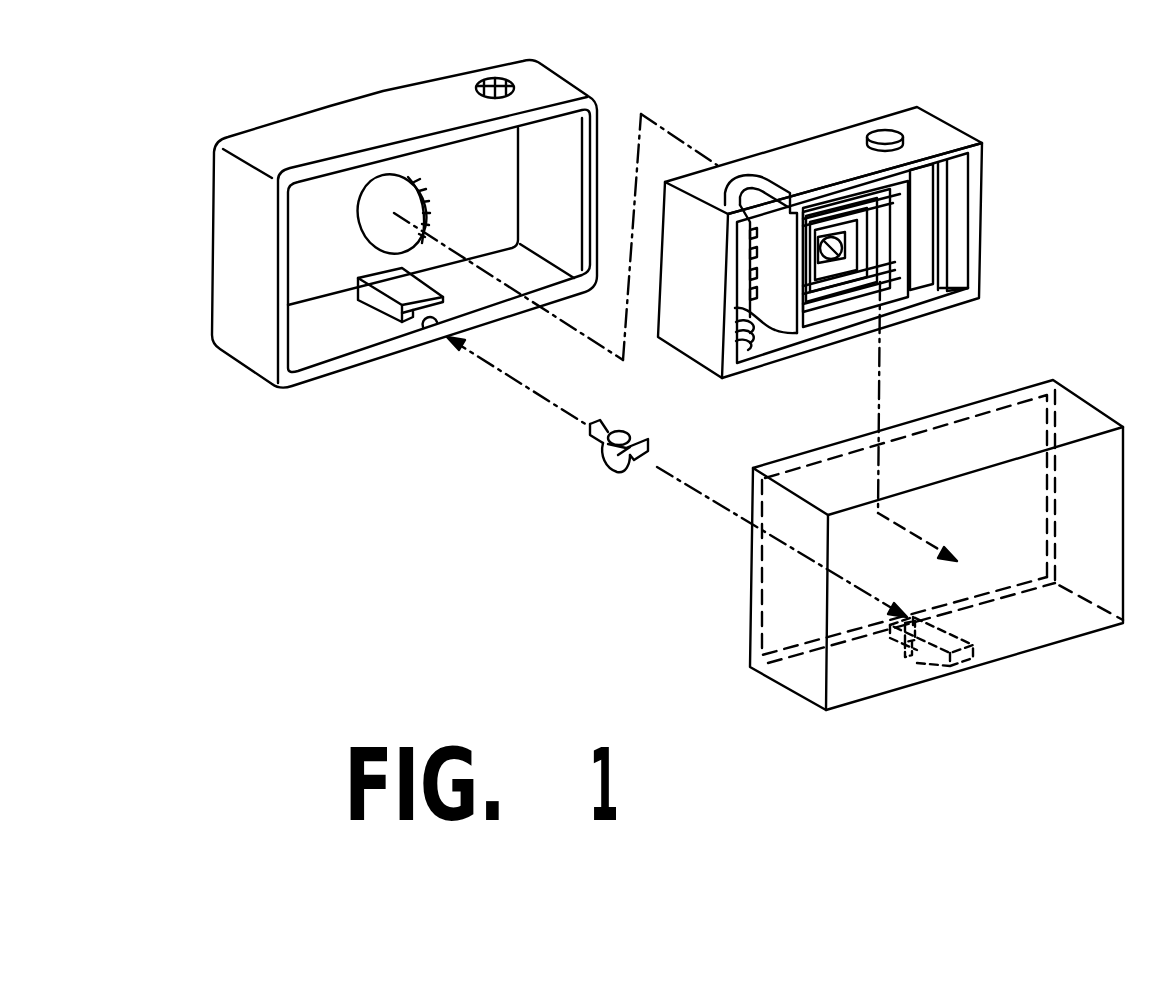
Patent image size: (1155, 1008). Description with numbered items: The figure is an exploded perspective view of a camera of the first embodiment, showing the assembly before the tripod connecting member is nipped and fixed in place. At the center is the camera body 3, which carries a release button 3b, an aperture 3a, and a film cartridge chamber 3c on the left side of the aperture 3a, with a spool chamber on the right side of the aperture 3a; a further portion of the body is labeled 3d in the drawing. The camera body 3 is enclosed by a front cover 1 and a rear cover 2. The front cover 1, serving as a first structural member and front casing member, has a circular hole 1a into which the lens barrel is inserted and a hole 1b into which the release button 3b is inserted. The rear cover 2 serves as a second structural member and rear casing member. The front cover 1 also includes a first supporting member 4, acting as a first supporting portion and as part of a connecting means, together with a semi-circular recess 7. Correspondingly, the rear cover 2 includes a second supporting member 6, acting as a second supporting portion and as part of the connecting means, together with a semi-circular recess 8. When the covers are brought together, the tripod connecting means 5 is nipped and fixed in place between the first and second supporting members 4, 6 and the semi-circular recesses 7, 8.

The front cover 1 is at (562, 88).
The circular hole 1a is at (380, 192).
The hole 1b is at (497, 78).
The rear cover 2 is at (1080, 407).
The camera body 3 is at (948, 140).
The aperture 3a is at (845, 257).
The release button 3b is at (886, 130).
The film cartridge chamber 3c is at (767, 338).
The recess 3d is at (940, 280).
The first supporting member 4 is at (392, 285).
The tripod connecting means 5 is at (620, 435).
The second supporting member 6 is at (957, 643).
The semi-circular recess 7 is at (433, 330).
The semi-circular recess 8 is at (907, 657).